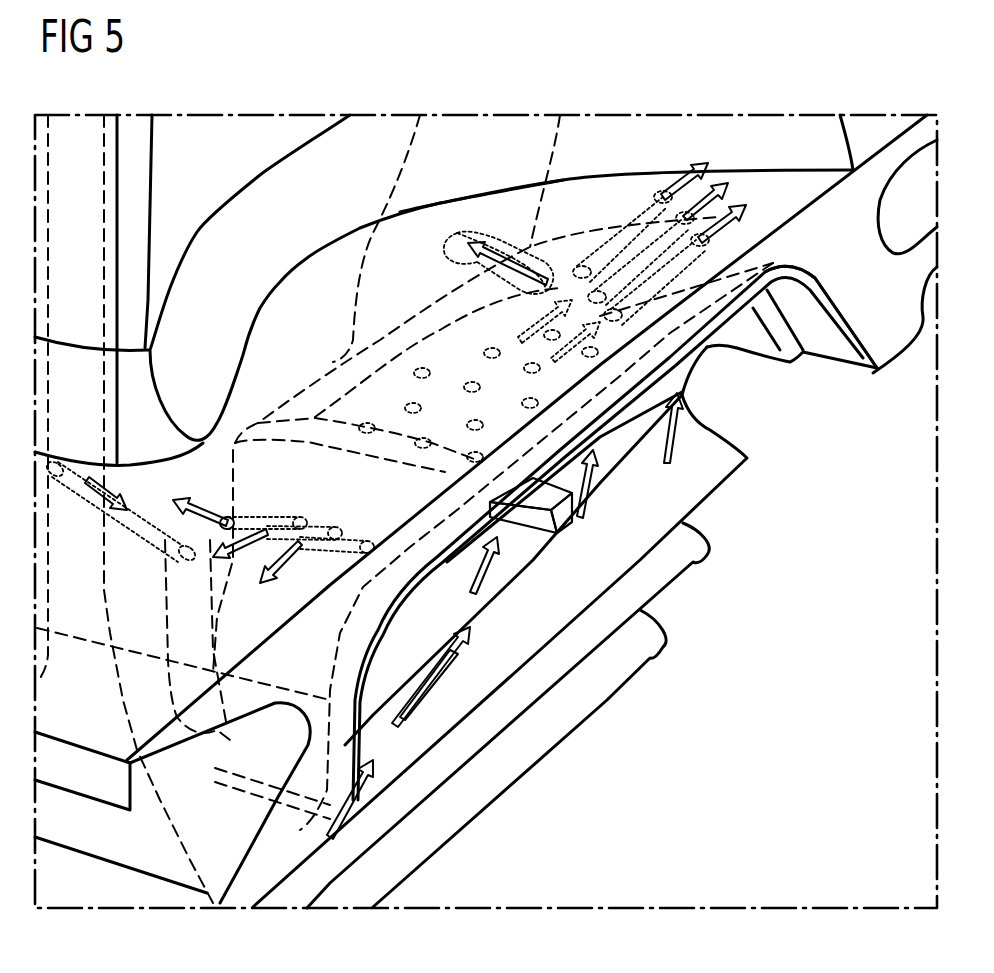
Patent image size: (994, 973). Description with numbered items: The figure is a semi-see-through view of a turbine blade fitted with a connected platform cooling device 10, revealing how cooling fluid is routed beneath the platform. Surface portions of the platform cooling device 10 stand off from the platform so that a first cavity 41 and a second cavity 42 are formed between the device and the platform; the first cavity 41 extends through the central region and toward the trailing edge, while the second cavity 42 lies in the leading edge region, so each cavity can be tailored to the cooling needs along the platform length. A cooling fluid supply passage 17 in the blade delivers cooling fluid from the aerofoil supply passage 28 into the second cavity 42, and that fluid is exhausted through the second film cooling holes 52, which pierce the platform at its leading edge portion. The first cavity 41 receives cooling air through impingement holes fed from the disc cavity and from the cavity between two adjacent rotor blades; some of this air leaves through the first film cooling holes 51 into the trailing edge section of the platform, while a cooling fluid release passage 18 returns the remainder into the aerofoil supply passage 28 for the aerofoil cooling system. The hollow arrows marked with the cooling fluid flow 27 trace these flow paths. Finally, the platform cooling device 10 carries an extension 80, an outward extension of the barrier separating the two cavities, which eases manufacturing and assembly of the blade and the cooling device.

The platform cooling device 10 is at (775, 345).
The cooling fluid supply passage 17 is at (155, 527).
The cooling fluid release passage 18 is at (513, 243).
The cooling fluid flow 27 is at (685, 180).
The aerofoil supply passage 28 is at (460, 217).
The first cavity 41 is at (675, 333).
The second cavity 42 is at (377, 520).
The first film cooling holes 51 is at (643, 207).
The second film cooling holes 52 is at (277, 522).
The extension 80 is at (553, 500).